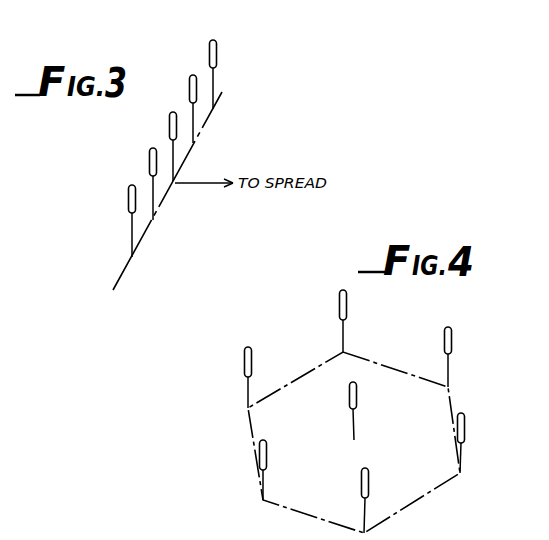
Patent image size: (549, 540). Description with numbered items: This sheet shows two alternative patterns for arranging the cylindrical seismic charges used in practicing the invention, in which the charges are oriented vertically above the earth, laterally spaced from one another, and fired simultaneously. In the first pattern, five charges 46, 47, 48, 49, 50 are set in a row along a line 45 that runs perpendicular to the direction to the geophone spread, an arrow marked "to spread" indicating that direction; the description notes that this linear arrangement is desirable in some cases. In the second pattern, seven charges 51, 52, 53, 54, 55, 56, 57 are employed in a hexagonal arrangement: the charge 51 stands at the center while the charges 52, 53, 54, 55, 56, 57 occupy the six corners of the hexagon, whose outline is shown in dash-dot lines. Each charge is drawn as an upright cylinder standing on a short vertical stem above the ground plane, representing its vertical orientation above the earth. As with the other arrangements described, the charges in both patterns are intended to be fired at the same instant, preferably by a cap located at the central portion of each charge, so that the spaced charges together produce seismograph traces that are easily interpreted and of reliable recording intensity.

In FIG. 3, the line 45 is at (123, 272).
In FIG. 3, the charge 46 is at (128, 190).
In FIG. 3, the charge 47 is at (149, 160).
In FIG. 3, the charge 48 is at (169, 120).
In FIG. 3, the charge 49 is at (189, 85).
In FIG. 3, the charge 50 is at (209, 51).
In FIG. 4, the charge 51 is at (358, 393).
In FIG. 4, the charge 52 is at (453, 338).
In FIG. 4, the charge 53 is at (466, 420).
In FIG. 4, the charge 54 is at (370, 483).
In FIG. 4, the charge 55 is at (268, 455).
In FIG. 4, the charge 56 is at (253, 357).
In FIG. 4, the charge 57 is at (348, 300).